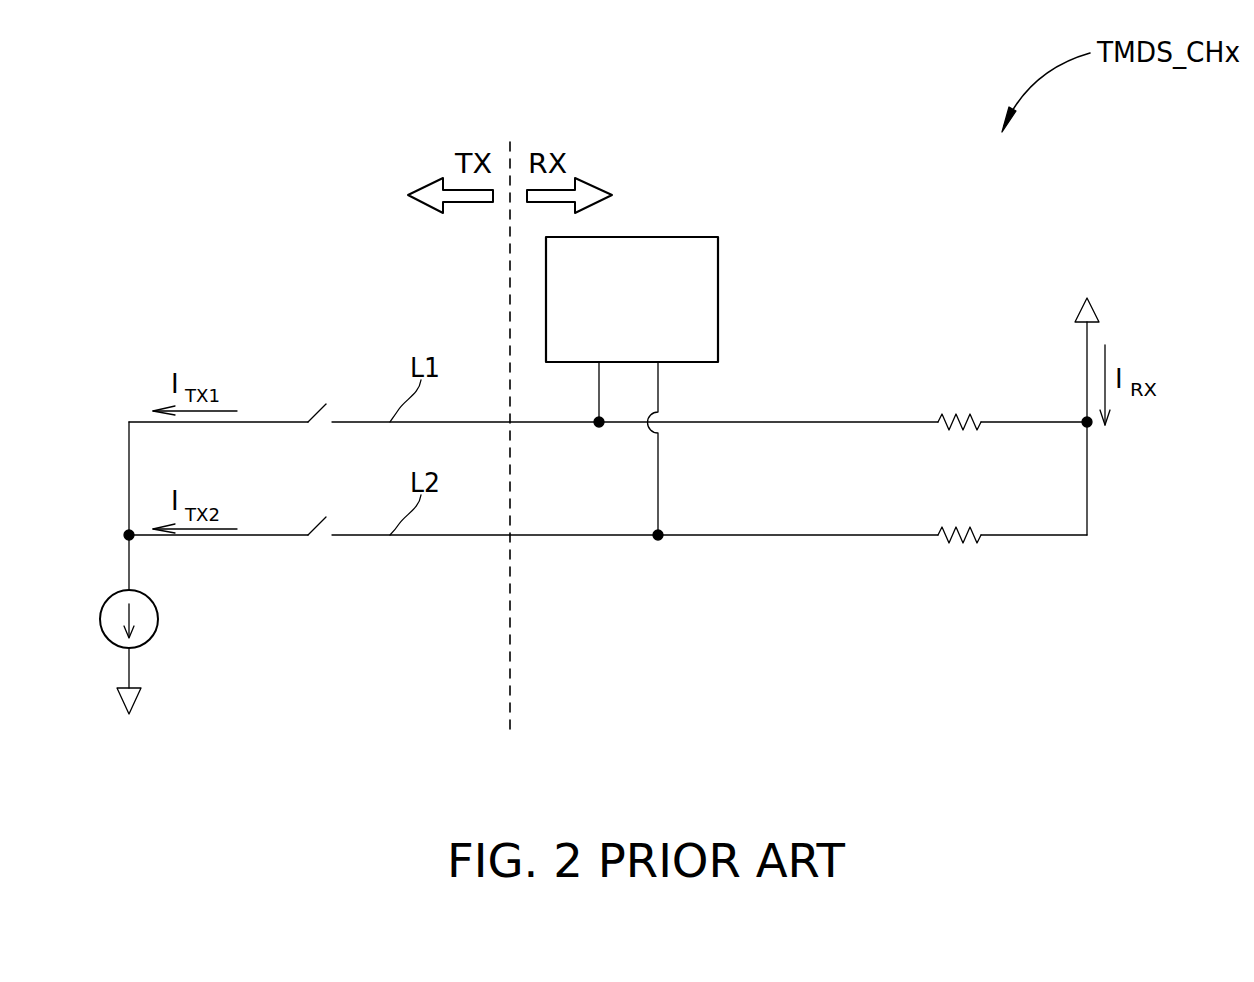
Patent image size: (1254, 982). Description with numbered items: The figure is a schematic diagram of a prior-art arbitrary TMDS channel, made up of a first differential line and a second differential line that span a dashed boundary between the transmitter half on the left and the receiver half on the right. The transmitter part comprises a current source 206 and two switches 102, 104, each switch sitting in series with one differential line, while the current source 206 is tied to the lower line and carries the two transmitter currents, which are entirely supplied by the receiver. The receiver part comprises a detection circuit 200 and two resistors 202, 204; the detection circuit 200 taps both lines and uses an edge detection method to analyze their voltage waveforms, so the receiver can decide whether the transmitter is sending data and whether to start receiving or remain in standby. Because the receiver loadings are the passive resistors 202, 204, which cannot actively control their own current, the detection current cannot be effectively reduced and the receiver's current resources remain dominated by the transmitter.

The switch 102 is at (323, 407).
The switch 104 is at (323, 519).
The detection circuit 200 is at (718, 290).
The resistor 202 is at (956, 414).
The resistor 204 is at (956, 527).
The current source 206 is at (158, 617).